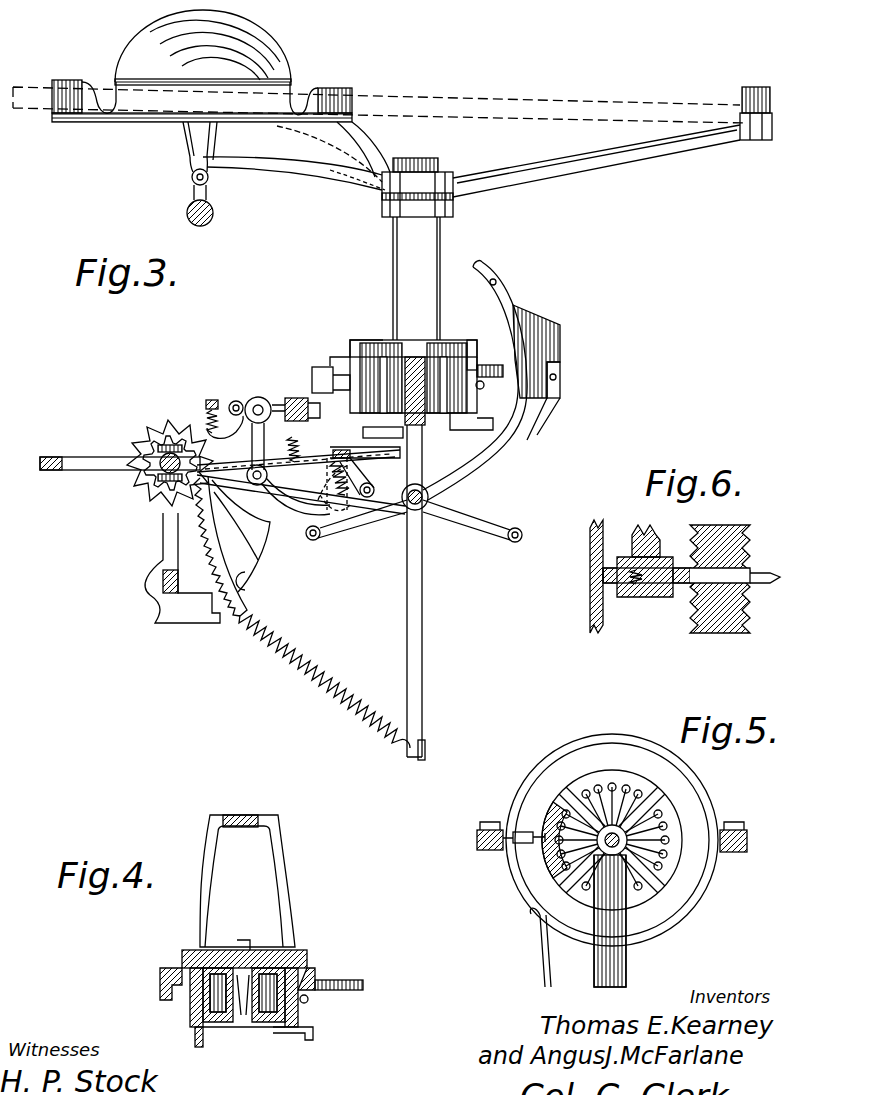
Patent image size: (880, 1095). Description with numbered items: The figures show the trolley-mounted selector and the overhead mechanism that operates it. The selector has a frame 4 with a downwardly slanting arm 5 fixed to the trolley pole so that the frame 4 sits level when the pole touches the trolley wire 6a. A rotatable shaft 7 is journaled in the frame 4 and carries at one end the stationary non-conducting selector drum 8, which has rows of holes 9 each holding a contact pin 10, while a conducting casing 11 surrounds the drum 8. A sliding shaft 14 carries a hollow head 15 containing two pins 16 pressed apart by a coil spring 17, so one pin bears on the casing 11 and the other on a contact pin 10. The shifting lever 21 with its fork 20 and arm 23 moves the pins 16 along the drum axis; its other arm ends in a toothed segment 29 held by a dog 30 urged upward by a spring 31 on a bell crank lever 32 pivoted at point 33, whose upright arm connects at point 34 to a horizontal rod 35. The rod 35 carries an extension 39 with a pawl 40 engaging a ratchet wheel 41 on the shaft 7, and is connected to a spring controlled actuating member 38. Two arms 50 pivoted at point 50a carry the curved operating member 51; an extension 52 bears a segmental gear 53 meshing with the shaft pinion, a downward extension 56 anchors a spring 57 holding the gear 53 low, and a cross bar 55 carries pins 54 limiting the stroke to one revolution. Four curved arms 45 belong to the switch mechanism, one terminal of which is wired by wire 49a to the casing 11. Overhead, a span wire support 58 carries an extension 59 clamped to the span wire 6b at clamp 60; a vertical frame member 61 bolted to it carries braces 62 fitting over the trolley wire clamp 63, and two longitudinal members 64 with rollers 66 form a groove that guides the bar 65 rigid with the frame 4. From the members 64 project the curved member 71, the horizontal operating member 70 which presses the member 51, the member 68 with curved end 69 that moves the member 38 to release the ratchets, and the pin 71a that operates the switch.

In FIG. 3, the frame 4 is at (56, 457).
In FIG. 5, the frame 4 is at (490, 850).
In FIG. 3, the slanting arm 5 is at (176, 614).
In FIG. 3, the trolley wire 6a is at (211, 226).
In FIG. 3, the span wire 6b is at (508, 104).
In FIG. 3, the rotatable shaft 7 is at (160, 472).
In FIG. 5, the rotatable shaft 7 is at (622, 850).
In FIG. 6, the selector drum 8 is at (742, 622).
In FIG. 5, the selector drum 8 is at (618, 772).
In FIG. 5, the holes 9 is at (568, 815).
In FIG. 6, the contact pin 10 is at (752, 575).
In FIG. 5, the contact pin 10 is at (556, 798).
In FIG. 6, the casing 11 is at (592, 560).
In FIG. 6, the shaft 14 is at (642, 532).
In FIG. 6, the hollow head 15 is at (630, 597).
In FIG. 5, the hollow head 15 is at (532, 847).
In FIG. 6, the pins 16 is at (610, 585).
In FIG. 5, the pins 16 is at (525, 831).
In FIG. 6, the coil spring 17 is at (644, 598).
In FIG. 3, the fork 20 is at (176, 438).
In FIG. 3, the shifting lever 21 is at (222, 464).
In FIG. 3, the arm 23 is at (333, 458).
In FIG. 3, the segment 29 is at (372, 477).
In FIG. 3, the dog 30 is at (328, 560).
In FIG. 3, the spring 31 is at (342, 500).
In FIG. 3, the bell crank lever 32 is at (298, 532).
In FIG. 3, the pivot point 33 is at (255, 486).
In FIG. 3, the pin connection point 34 is at (263, 396).
In FIG. 3, the horizontal rod 35 is at (268, 396).
In FIG. 3, the actuating member 38 is at (322, 391).
In FIG. 3, the extension 39 is at (234, 401).
In FIG. 3, the pawl 40 is at (211, 400).
In FIG. 3, the ratchet wheel 41 is at (156, 503).
In FIG. 3, the curved arms 45 is at (385, 438).
In FIG. 5, the wire 49a is at (541, 955).
In FIG. 3, the arms 50 is at (523, 447).
In FIG. 3, the pivot point 50a is at (426, 487).
In FIG. 3, the operating member 51 is at (525, 322).
In FIG. 3, the extension 52 is at (375, 512).
In FIG. 3, the segmental gear 53 is at (212, 580).
In FIG. 3, the pins 54 is at (152, 444).
In FIG. 3, the cross bar 55 is at (450, 528).
In FIG. 3, the downward extension 56 is at (428, 663).
In FIG. 3, the spring 57 is at (350, 682).
In FIG. 3, the span wire support 58 is at (280, 54).
In FIG. 3, the extension 59 is at (357, 148).
In FIG. 3, the clamp 60 is at (755, 132).
In FIG. 3, the vertical frame member 61 is at (393, 270).
In FIG. 4, the vertical frame member 61 is at (290, 921).
In FIG. 3, the braces 62 is at (310, 172).
In FIG. 3, the trolley wire clamp 63 is at (208, 180).
In FIG. 3, the longitudinal members 64 is at (386, 358).
In FIG. 4, the longitudinal members 64 is at (190, 1010).
In FIG. 3, the guide bar 65 is at (416, 355).
In FIG. 4, the vertical rollers 66 is at (250, 1022).
In FIG. 3, the member 68 is at (338, 357).
In FIG. 4, the member 68 is at (165, 990).
In FIG. 3, the curved end 69 is at (316, 368).
In FIG. 3, the operating member 70 is at (482, 368).
In FIG. 4, the operating member 70 is at (350, 980).
In FIG. 4, the member 71 is at (308, 1042).
In FIG. 4, the pin 71a is at (200, 1048).